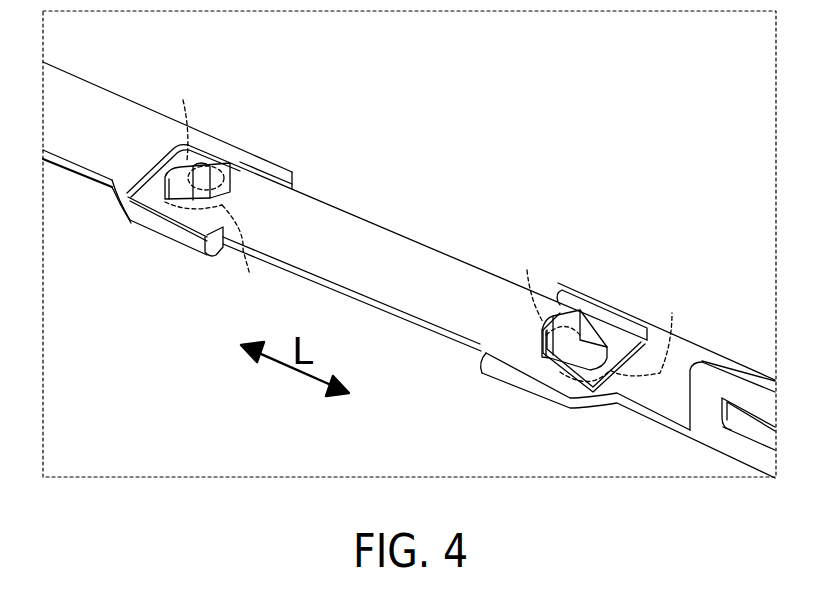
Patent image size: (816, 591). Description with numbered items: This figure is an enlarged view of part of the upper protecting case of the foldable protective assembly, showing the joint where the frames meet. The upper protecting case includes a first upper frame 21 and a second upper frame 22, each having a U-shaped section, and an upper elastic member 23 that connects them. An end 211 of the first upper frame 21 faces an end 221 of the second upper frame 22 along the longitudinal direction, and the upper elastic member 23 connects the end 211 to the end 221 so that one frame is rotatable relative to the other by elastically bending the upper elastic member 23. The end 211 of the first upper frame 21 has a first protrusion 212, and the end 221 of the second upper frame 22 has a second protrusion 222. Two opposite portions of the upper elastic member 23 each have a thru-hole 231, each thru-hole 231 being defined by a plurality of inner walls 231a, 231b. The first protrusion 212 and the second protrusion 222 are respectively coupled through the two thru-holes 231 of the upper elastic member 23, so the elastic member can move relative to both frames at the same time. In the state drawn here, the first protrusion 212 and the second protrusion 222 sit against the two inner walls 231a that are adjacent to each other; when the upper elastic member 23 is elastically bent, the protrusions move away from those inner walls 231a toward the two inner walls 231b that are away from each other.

The first upper frame 21 is at (106, 86).
The end of the first upper frame 211 is at (140, 204).
The first protrusion 212 is at (230, 167).
The second upper frame 22 is at (740, 358).
The end of the second upper frame 221 is at (567, 390).
The second protrusion 222 is at (575, 325).
The upper elastic member 23 is at (440, 244).
The thru-hole 231 is at (180, 196).
The inner wall 231a is at (372, 268).
The inner wall 231b is at (425, 229).